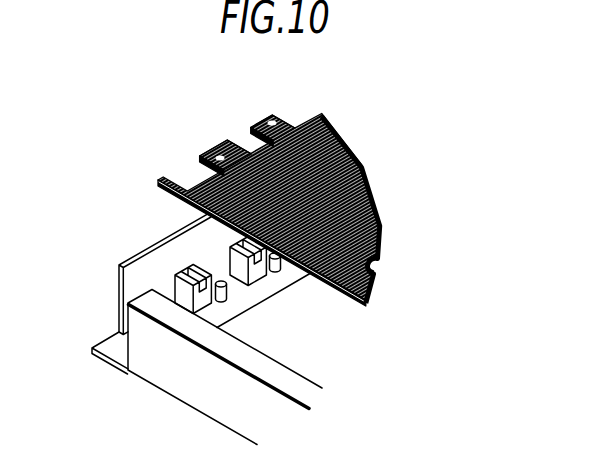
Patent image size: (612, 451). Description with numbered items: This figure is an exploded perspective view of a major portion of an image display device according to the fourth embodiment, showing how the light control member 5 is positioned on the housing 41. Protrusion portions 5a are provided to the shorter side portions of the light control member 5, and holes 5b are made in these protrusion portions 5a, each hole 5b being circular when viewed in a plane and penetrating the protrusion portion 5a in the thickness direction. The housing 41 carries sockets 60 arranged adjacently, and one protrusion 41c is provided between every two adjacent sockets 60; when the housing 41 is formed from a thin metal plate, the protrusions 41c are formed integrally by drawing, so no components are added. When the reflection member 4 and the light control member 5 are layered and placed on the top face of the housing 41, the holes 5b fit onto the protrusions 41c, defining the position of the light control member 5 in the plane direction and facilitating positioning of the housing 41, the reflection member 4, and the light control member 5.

The reflection member 4 is at (312, 353).
The housing 41 is at (170, 387).
The protrusion 41c is at (218, 282).
The light control member 5 is at (285, 172).
The protrusion portion 5a is at (289, 119).
The hole 5b is at (269, 116).
The socket 60 is at (257, 276).